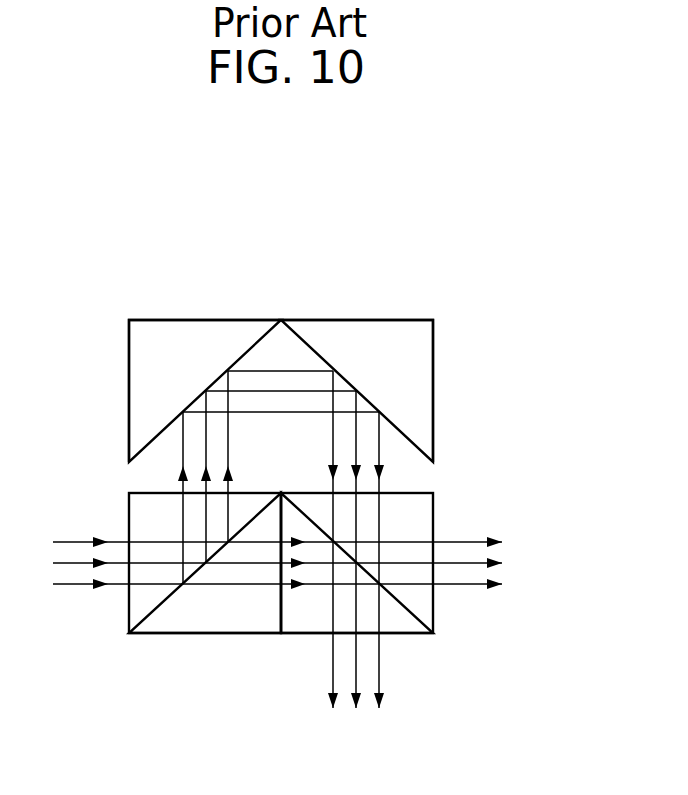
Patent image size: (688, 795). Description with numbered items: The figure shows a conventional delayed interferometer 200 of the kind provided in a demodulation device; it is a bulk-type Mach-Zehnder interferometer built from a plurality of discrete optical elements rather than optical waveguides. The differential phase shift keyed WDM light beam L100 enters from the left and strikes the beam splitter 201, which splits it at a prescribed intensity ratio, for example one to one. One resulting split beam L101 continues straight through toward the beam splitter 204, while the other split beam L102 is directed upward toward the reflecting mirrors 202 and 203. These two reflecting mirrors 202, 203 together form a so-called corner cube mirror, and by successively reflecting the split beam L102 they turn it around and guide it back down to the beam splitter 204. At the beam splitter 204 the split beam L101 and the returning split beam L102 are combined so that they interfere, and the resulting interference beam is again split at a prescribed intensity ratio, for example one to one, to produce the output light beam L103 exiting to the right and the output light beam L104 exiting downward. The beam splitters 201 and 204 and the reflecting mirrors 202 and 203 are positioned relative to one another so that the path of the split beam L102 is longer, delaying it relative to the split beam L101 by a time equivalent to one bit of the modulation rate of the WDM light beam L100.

The delayed interferometer 200 is at (303, 426).
The beam splitter 201 is at (163, 623).
The reflecting mirror 202 is at (198, 333).
The reflecting mirror 203 is at (362, 333).
The beam splitter 204 is at (300, 622).
The WDM light beam L100 is at (72, 555).
The split beam L101 is at (235, 573).
The split beam L102 is at (280, 399).
The output light beam L103 is at (472, 552).
The output light beam L104 is at (365, 669).